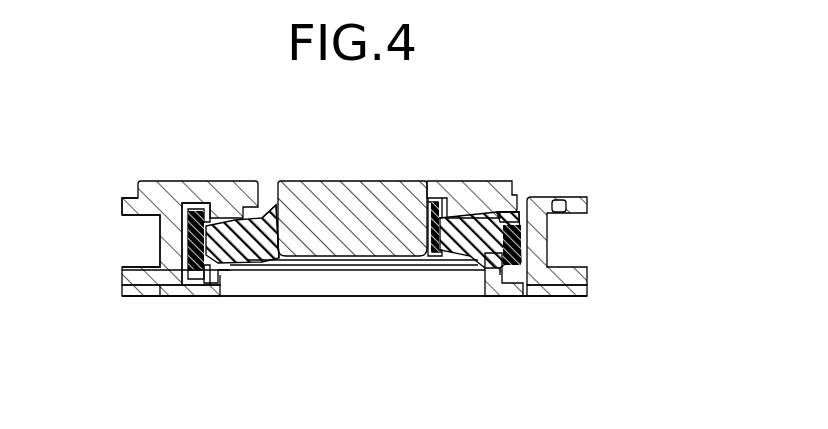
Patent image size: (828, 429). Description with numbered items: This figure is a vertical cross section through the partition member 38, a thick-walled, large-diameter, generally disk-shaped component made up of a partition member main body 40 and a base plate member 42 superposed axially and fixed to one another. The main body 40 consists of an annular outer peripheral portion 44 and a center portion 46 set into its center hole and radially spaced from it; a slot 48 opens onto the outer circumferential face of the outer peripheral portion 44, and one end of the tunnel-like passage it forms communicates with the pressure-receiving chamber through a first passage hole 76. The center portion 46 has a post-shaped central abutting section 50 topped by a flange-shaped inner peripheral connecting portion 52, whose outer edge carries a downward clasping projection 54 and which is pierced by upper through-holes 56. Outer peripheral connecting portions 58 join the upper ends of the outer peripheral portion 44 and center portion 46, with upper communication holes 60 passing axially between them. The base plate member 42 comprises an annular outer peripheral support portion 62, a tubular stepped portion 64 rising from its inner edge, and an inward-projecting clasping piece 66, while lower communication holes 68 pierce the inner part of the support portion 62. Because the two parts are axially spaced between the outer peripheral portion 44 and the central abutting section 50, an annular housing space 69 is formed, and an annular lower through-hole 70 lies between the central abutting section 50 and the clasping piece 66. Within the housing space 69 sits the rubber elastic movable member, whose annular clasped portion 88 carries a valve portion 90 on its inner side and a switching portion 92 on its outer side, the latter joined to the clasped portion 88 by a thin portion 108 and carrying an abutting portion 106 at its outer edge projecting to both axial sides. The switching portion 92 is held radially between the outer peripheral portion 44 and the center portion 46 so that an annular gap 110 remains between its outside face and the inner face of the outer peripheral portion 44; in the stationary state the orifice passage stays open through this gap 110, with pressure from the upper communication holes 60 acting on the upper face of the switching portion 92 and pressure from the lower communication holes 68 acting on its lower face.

The partition member 38 is at (590, 170).
The partition member main body 40 is at (141, 186).
The base plate member 42 is at (150, 298).
The outer peripheral portion 44 is at (161, 192).
The center portion 46 is at (334, 178).
The slot 48 is at (143, 228).
The central abutting section 50 is at (358, 245).
The inner peripheral connecting portion 52 is at (440, 195).
The clasping projection 54 is at (228, 218).
The upper through-hole 56 is at (270, 206).
The outer peripheral connecting portion 58 is at (200, 205).
The upper communication hole 60 is at (520, 198).
The outer peripheral support portion 62 is at (183, 291).
The stepped portion 64 is at (217, 280).
The clasping piece 66 is at (243, 272).
The lower communication hole 68 is at (522, 290).
The housing space 69 is at (208, 285).
The lower through-hole 70 is at (280, 272).
The first passage hole 76 is at (556, 199).
The clasped portion 88 is at (472, 215).
The valve portion 90 is at (405, 212).
The switching portion 92 is at (503, 240).
The abutting portion 106 is at (497, 212).
The thin portion 108 is at (490, 245).
The gap 110 is at (182, 238).